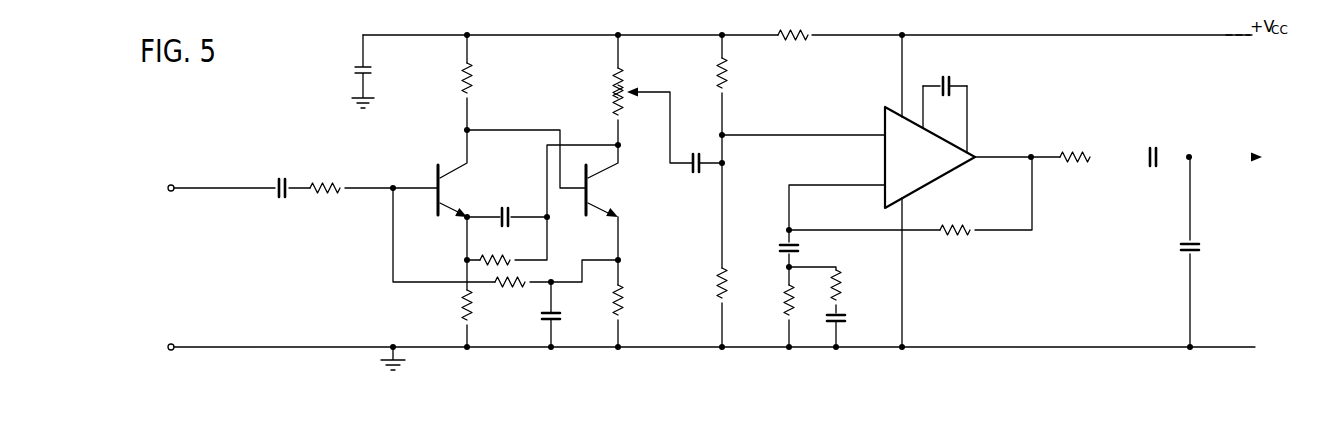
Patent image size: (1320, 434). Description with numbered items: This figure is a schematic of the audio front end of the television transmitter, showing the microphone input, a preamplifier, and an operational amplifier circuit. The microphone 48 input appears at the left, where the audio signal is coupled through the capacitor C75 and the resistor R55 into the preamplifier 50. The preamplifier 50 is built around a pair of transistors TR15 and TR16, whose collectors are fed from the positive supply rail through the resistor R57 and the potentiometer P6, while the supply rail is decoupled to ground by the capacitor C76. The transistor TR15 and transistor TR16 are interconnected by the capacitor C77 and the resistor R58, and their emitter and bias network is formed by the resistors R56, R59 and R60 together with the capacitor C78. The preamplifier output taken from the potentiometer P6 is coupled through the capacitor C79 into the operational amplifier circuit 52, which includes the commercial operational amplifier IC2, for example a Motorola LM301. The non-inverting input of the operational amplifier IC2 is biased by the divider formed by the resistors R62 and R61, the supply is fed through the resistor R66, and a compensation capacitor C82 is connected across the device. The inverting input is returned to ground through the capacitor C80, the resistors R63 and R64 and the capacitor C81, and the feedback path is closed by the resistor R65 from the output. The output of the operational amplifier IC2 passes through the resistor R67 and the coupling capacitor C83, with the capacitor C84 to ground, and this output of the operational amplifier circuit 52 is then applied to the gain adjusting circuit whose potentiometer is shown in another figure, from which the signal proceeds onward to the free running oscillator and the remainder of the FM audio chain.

The microphone 48 is at (195, 286).
The preamplifier 50 is at (543, 110).
The operational amplifier circuit 52 is at (993, 287).
The capacitor C75 is at (285, 175).
The capacitor C76 is at (341, 71).
The capacitor C77 is at (522, 210).
The capacitor C78 is at (536, 314).
The capacitor C79 is at (702, 180).
The capacitor C80 is at (771, 248).
The capacitor C81 is at (855, 331).
The capacitor C82 is at (954, 79).
The capacitor C83 is at (1155, 144).
The capacitor C84 is at (1168, 252).
The resistor R55 is at (331, 179).
The resistor R56 is at (449, 303).
The resistor R57 is at (484, 82).
The resistor R58 is at (511, 252).
The resistor R59 is at (512, 294).
The resistor R60 is at (635, 282).
The resistor R61 is at (708, 307).
The resistor R62 is at (739, 85).
The resistor R63 is at (772, 307).
The resistor R64 is at (853, 291).
The resistor R65 is at (957, 221).
The resistor R66 is at (795, 26).
The resistor R67 is at (1076, 146).
The potentiometer P6 is at (653, 99).
The transistor TR15 is at (462, 175).
The transistor TR16 is at (612, 183).
The operational amplifier IC2 is at (927, 191).